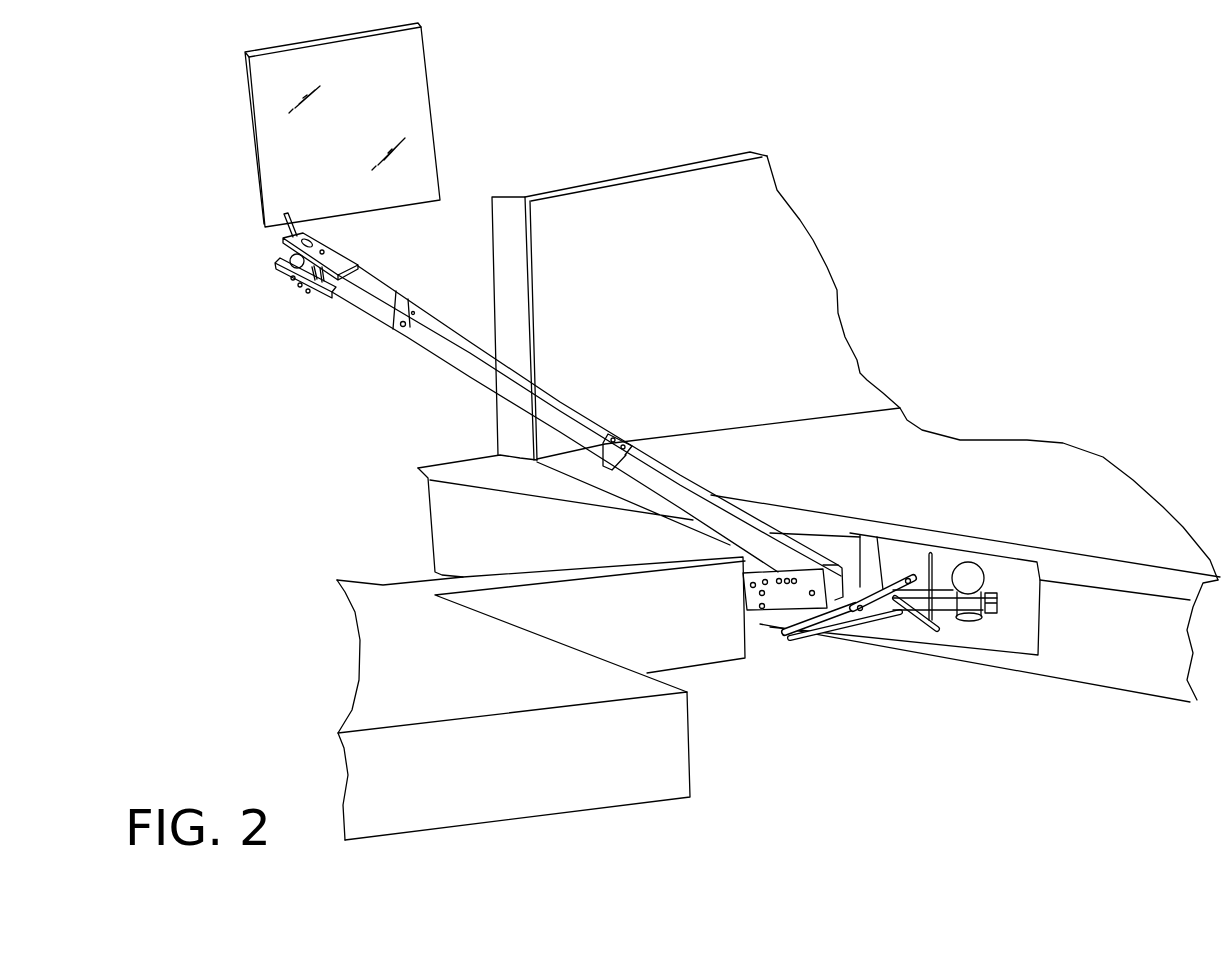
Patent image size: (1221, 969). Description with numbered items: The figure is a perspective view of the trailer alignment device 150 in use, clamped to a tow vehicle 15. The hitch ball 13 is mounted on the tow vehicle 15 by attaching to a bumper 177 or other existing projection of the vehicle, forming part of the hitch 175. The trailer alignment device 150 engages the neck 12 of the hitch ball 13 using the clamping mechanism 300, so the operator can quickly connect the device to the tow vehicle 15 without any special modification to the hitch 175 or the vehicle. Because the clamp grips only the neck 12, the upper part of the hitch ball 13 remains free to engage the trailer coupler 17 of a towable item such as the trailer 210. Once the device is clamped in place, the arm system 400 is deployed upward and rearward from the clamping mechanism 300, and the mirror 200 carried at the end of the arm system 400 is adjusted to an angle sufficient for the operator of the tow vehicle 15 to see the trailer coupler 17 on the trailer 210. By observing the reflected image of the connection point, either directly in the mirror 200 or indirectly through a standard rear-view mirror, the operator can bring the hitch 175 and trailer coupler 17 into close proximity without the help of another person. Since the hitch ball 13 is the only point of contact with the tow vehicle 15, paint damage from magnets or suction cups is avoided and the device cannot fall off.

The mirror 200 is at (410, 88).
The tow vehicle 15 is at (505, 280).
The trailer alignment device 150 is at (722, 317).
The arm system 400 is at (583, 385).
The trailer coupler 17 is at (700, 658).
The trailer 210 is at (650, 787).
The bumper 177 is at (1142, 678).
The hitch 175 is at (973, 685).
The clamping mechanism 300 is at (900, 665).
The hitch ball 13 is at (968, 566).
The neck 12 is at (982, 618).